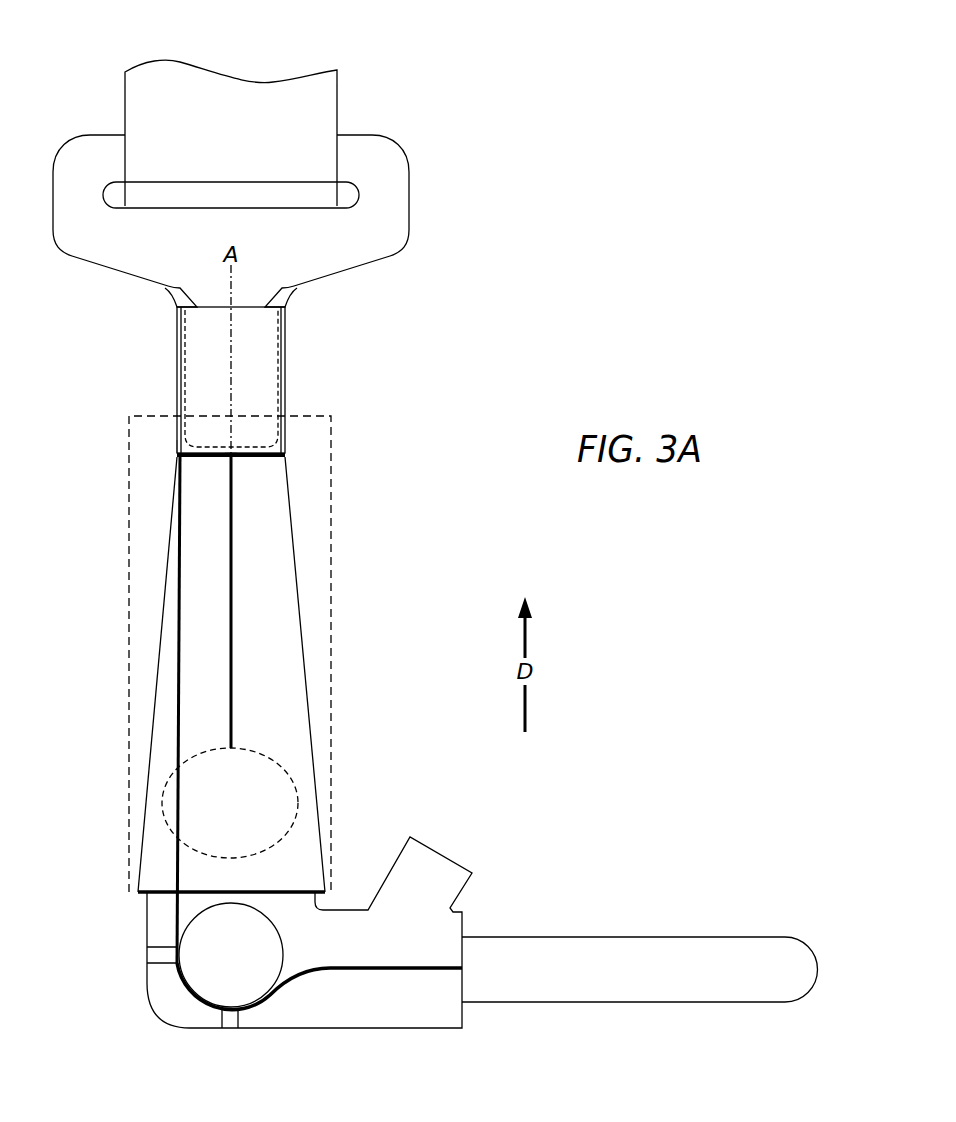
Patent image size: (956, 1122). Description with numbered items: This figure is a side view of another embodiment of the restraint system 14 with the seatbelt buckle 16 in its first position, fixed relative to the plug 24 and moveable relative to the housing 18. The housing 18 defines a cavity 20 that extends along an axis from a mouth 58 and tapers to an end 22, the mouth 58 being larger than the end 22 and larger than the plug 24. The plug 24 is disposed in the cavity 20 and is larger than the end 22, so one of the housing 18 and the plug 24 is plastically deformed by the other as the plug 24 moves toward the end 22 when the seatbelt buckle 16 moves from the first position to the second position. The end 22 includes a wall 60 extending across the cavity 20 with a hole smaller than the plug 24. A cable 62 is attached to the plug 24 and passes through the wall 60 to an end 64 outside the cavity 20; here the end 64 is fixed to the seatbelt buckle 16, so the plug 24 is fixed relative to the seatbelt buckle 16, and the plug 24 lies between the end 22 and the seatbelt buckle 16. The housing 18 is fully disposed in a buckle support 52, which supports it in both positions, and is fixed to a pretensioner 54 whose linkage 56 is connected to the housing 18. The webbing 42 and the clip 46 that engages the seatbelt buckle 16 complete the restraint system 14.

The restraint system 14 is at (588, 216).
The seatbelt buckle 16 is at (286, 347).
The housing 18 is at (160, 640).
The cavity 20 is at (264, 557).
The end 22 is at (170, 454).
The plug 24 is at (217, 751).
The webbing 42 is at (338, 103).
The clip 46 is at (409, 221).
The buckle support 52 is at (332, 757).
The pretensioner 54 is at (622, 937).
The linkage 56 is at (178, 720).
The mouth 58 is at (160, 890).
The wall 60 is at (249, 456).
The cable 62 is at (233, 678).
The end 64 is at (226, 459).